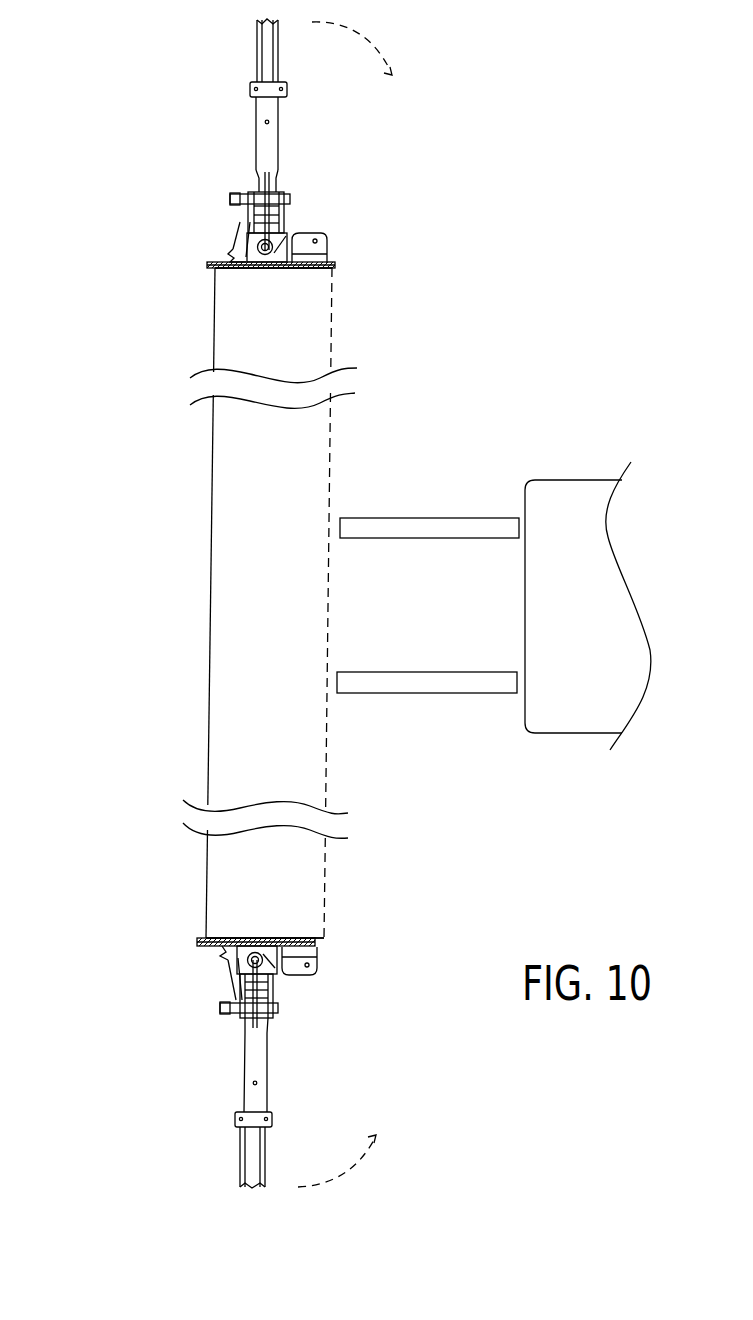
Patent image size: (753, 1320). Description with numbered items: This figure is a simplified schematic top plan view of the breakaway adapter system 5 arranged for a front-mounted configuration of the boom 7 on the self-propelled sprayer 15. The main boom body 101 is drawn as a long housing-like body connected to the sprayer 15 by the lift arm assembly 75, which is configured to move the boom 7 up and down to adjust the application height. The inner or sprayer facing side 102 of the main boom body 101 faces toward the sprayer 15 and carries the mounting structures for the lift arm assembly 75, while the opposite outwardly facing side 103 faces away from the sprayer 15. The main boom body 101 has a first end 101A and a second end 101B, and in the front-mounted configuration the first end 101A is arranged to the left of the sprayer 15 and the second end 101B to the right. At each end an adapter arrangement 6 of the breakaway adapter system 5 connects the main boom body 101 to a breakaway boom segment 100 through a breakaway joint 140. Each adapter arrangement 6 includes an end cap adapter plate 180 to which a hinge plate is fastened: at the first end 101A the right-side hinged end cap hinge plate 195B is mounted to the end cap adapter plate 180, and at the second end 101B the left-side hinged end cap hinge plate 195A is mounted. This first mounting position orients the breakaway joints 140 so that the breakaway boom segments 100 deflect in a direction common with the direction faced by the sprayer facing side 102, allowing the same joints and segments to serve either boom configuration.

The breakaway adapter system 5 is at (125, 940).
The adapter arrangement 6 is at (195, 262).
The boom 7 is at (183, 582).
The self-propelled sprayer 15 is at (575, 470).
The lift arm assembly 75 is at (447, 510).
The breakaway boom segment 100 is at (297, 137).
The main boom body 101 is at (197, 622).
The first end 101A is at (341, 905).
The second end 101B is at (350, 302).
The sprayer facing side 102 is at (328, 752).
The outwardly facing side 103 is at (208, 684).
The breakaway joint 140 is at (308, 205).
The end cap adapter plate 180 is at (220, 262).
The left-side hinged end cap hinge plate 195A is at (235, 225).
The right-side hinged end cap hinge plate 195B is at (225, 977).